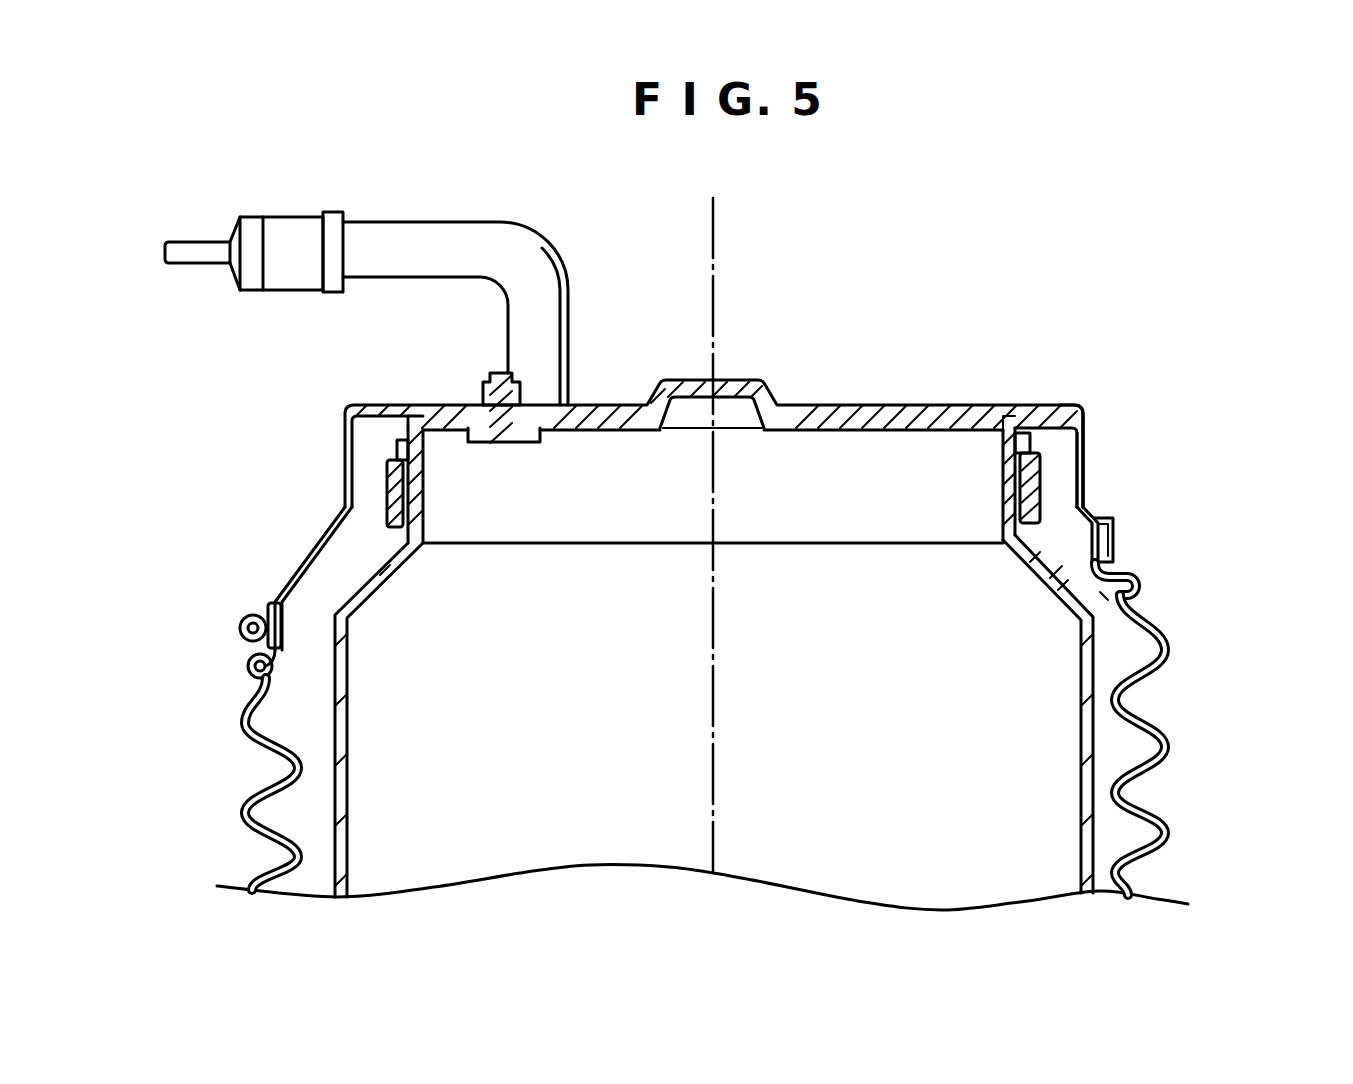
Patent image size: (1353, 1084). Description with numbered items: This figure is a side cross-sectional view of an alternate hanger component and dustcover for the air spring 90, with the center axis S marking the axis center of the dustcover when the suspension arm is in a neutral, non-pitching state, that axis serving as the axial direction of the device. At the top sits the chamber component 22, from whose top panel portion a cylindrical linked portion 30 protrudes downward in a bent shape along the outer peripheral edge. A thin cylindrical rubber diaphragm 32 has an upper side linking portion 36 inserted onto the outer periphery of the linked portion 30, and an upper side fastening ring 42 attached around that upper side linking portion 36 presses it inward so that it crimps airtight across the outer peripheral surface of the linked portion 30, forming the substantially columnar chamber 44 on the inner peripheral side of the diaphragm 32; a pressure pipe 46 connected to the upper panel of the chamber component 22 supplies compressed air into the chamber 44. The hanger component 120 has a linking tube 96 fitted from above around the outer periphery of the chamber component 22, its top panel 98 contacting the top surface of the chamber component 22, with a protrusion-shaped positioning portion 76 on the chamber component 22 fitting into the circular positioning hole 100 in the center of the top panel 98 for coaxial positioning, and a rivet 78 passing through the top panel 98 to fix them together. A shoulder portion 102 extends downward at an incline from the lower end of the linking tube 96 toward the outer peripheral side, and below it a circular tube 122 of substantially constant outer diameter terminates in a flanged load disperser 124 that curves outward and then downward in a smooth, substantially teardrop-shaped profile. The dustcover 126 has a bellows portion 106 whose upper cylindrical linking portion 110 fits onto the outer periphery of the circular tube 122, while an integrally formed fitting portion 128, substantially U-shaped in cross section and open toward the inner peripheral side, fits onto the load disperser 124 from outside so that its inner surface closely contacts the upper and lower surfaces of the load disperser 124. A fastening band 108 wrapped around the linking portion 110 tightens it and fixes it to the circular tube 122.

The chamber component 22 is at (1019, 403).
The linked portion 30 is at (424, 482).
The diaphragm 32 is at (350, 740).
The upper side linking portion 36 is at (405, 455).
The upper side fastening ring 42 is at (390, 458).
The chamber 44 is at (770, 792).
The pressure pipe 46 is at (441, 221).
The positioning portion 76 is at (770, 384).
The rivet 78 is at (535, 442).
The air spring 90 is at (1159, 335).
The linking tube 96 is at (1085, 440).
The top panel 98 is at (935, 403).
The positioning hole 100 is at (672, 428).
The shoulder portion 102 is at (312, 556).
The bellows portion 106 is at (1170, 745).
The fastening band 108 is at (1120, 560).
The linking portion 110 is at (270, 606).
The hanger component 120 is at (1079, 405).
The circular tube 122 is at (1072, 558).
The load disperser 124 is at (1107, 600).
The dustcover 126 is at (1143, 533).
The fitting portion 128 is at (250, 665).
The center axis S is at (714, 225).